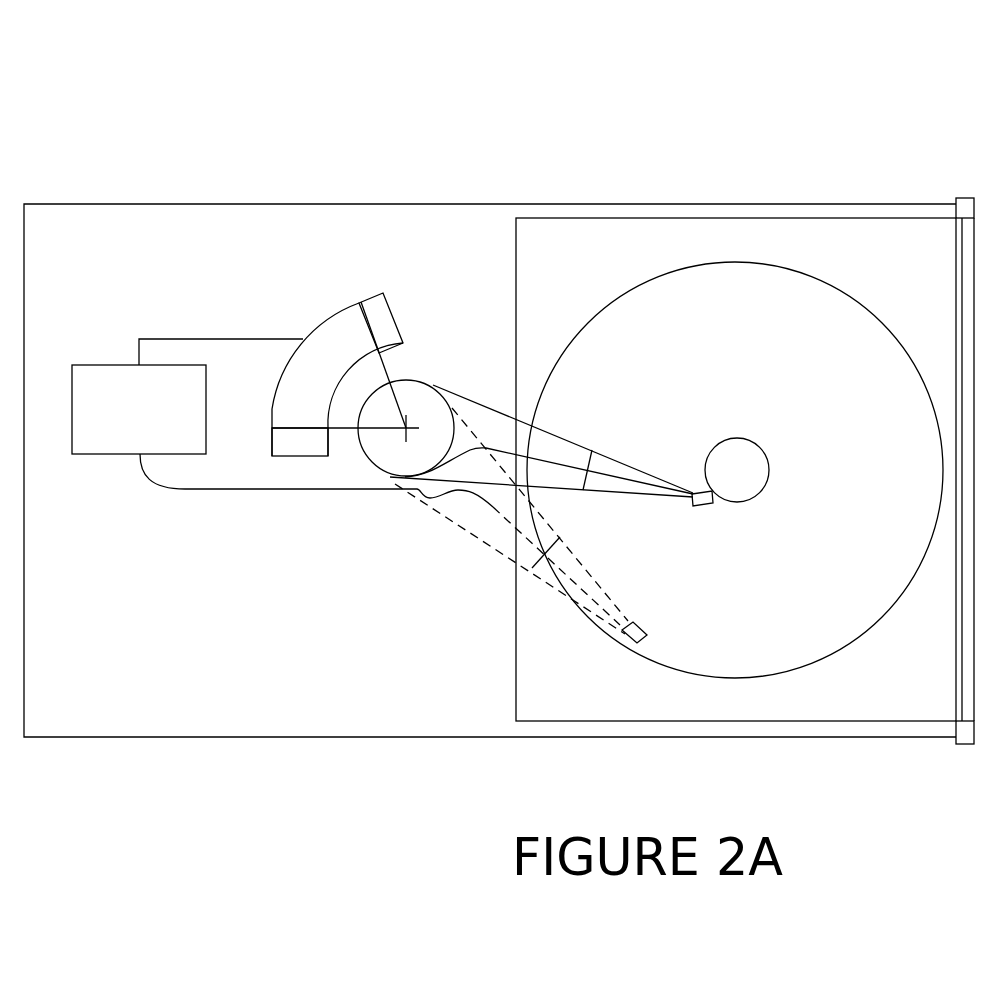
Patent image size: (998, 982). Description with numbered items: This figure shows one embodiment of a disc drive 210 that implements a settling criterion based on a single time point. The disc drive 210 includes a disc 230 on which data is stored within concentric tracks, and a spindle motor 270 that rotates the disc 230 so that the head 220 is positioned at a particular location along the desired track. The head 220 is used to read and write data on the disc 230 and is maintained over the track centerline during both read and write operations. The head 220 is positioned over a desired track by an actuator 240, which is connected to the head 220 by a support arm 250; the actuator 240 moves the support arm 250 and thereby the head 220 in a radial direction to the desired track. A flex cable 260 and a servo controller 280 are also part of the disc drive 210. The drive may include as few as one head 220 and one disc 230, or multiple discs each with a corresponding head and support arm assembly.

The disc drive 210 is at (771, 118).
The head 220 is at (712, 520).
The disc 230 is at (823, 266).
The actuator 240 is at (348, 332).
The support arm 250 is at (578, 427).
The flex cable 260 is at (223, 491).
The spindle motor 270 is at (763, 430).
The servo controller 280 is at (187, 397).